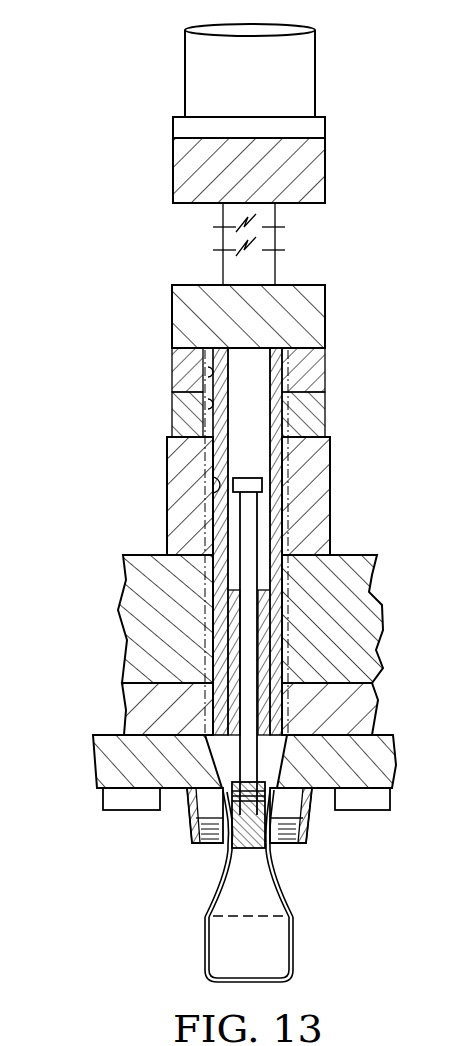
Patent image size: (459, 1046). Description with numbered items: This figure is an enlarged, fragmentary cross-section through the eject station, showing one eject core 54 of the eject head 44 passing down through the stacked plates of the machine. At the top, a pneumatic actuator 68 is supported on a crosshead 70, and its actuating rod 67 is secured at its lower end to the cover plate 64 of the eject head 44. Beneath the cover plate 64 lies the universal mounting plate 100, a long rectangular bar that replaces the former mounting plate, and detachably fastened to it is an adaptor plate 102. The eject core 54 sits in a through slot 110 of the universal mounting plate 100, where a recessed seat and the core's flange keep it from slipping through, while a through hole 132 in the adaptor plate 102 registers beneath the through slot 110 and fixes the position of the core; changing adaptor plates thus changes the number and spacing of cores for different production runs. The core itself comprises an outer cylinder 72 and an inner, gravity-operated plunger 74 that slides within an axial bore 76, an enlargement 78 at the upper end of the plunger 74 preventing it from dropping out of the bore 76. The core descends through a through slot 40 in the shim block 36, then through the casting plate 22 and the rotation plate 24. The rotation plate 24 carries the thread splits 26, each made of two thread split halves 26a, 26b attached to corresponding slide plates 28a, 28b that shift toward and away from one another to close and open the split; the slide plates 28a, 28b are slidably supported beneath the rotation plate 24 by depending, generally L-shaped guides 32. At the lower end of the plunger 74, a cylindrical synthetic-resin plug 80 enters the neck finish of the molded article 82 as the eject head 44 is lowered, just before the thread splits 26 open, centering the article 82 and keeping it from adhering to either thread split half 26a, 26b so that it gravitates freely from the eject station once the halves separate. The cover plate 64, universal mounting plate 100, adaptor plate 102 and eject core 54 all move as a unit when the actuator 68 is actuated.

The pneumatic actuator 68 is at (320, 76).
The crosshead 70 is at (315, 170).
The actuating rod 67 is at (265, 258).
The eject head 44 is at (237, 314).
The cover plate 64 is at (313, 316).
The eject core 54 is at (262, 392).
The universal mounting plate 100 is at (312, 367).
The adaptor plate 102 is at (312, 417).
The through slot 110 is at (176, 388).
The through hole 132 is at (185, 422).
The enlargement 78 is at (247, 478).
The through slot 40 is at (217, 495).
The shim block 36 is at (322, 500).
The outer cylinder 72 is at (275, 540).
The casting plate 22 is at (360, 590).
The axial bore 76 is at (255, 612).
The plunger 74 is at (255, 665).
The rotation plate 24 is at (360, 700).
The slide plate 28b is at (105, 765).
The slide plate 28a is at (383, 757).
The L-shaped guide 32 is at (110, 812).
The thread split 26 is at (270, 839).
The thread split half 26b is at (196, 843).
The thread split half 26a is at (302, 845).
The plug 80 is at (255, 858).
The article 82 is at (295, 955).